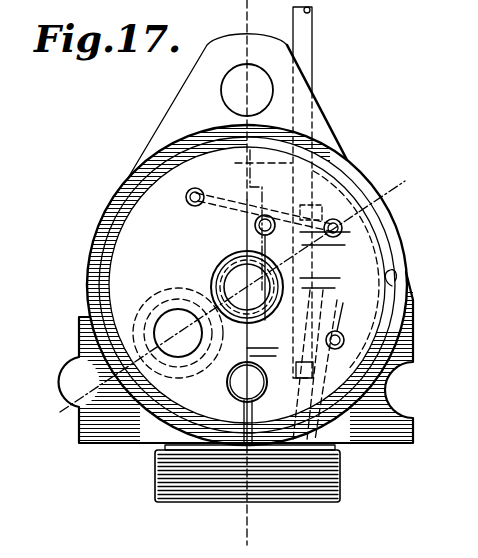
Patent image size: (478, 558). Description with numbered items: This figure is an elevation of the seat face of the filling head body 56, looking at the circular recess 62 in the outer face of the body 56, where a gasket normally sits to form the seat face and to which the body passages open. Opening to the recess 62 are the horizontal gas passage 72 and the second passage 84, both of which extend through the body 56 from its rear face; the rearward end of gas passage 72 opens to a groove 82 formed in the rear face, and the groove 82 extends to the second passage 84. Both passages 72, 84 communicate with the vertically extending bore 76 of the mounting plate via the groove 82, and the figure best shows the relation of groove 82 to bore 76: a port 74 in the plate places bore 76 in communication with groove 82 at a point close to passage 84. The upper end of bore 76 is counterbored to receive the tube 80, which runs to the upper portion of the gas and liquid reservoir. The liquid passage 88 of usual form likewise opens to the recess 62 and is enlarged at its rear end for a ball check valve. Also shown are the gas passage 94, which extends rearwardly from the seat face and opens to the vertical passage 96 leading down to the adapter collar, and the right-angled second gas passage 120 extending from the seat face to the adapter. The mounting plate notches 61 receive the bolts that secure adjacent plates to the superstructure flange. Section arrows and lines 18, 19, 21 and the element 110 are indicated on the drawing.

The direction arrow / line of section 18 is at (280, 24).
The direction arrow / line of section 19 is at (182, 170).
The section line 21 is at (98, 424).
The filling head body 56 is at (404, 250).
The mounting plate notch 61 is at (80, 374).
The circular recess 62 is at (395, 281).
The horizontal gas passage 72 is at (195, 206).
The port 74 is at (333, 221).
The vertically extending bore 76 is at (300, 190).
The tube 80 is at (314, 55).
The groove 82 is at (221, 204).
The second passage 84 is at (336, 238).
The liquid passage 88 is at (154, 333).
The gas passage 94 is at (272, 218).
The vertical passage 96 is at (268, 337).
The opening 110 is at (227, 390).
The second gas passage 120 is at (305, 365).